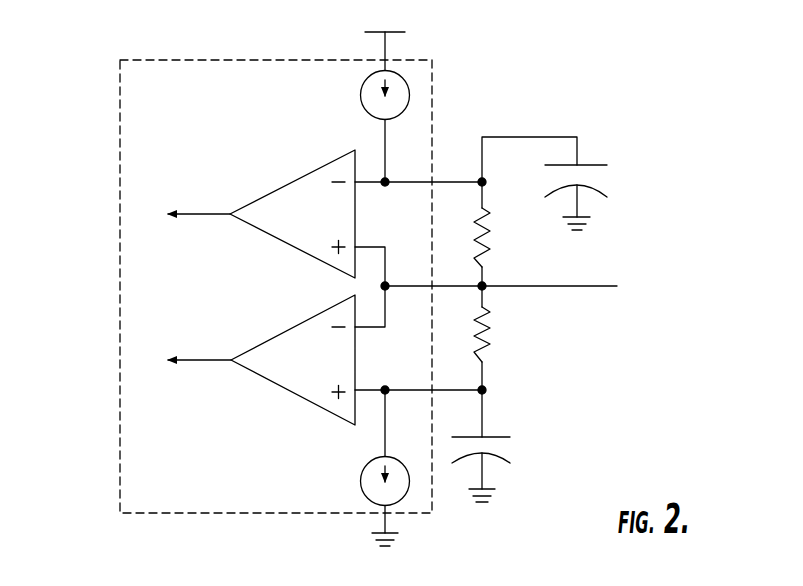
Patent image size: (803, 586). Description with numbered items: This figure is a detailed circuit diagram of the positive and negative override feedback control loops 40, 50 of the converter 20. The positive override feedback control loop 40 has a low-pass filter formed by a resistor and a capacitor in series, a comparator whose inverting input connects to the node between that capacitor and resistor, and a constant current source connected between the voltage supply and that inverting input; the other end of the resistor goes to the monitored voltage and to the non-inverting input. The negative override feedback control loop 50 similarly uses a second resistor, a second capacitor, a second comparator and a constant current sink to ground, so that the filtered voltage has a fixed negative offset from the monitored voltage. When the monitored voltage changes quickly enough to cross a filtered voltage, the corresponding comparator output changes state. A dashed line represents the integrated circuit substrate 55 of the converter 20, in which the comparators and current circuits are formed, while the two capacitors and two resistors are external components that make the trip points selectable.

The converter 20 is at (381, 277).
The positive override feedback control loop 40 is at (242, 262).
The negative override feedback control loop 50 is at (242, 315).
The integrated circuit substrate 55 is at (344, 277).